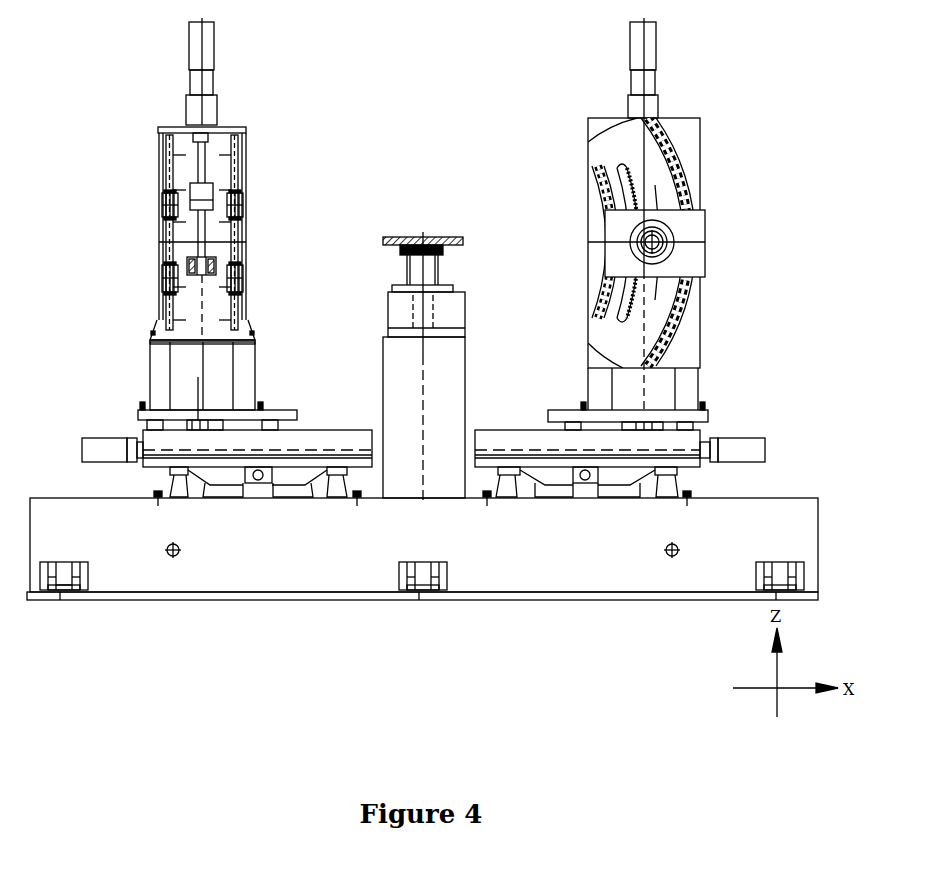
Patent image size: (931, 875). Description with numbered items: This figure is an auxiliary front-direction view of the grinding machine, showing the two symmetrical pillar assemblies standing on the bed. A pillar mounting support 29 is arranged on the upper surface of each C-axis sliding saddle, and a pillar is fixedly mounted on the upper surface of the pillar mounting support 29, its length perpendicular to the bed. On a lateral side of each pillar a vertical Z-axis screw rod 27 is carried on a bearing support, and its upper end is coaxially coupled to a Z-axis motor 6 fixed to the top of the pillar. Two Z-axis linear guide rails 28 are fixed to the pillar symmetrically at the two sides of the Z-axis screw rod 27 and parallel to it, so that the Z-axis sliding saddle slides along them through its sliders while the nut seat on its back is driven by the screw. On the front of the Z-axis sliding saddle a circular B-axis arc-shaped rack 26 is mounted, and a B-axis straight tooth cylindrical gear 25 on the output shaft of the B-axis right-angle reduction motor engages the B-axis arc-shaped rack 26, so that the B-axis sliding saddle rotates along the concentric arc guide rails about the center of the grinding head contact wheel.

The Z-axis motor 6 is at (207, 110).
The Z-axis screw rod 27 is at (201, 172).
The Z-axis linear guide rail 28 is at (162, 182).
The pillar mounting support 29 is at (160, 387).
The B-axis arc-shaped rack 26 is at (600, 182).
The B-axis straight tooth cylindrical gear 25 is at (640, 252).